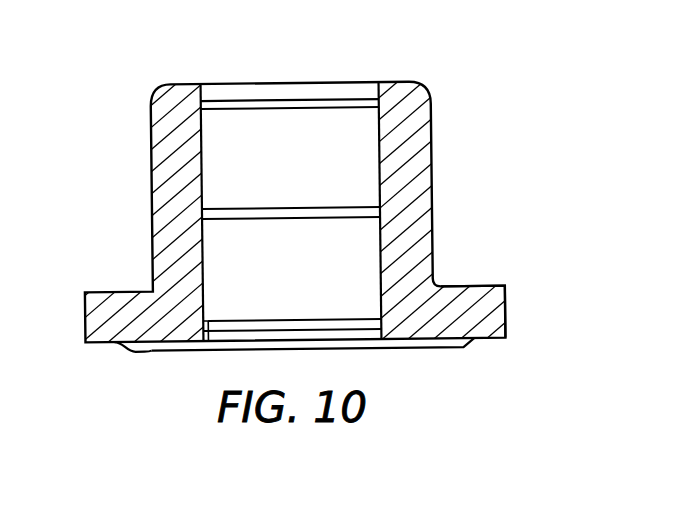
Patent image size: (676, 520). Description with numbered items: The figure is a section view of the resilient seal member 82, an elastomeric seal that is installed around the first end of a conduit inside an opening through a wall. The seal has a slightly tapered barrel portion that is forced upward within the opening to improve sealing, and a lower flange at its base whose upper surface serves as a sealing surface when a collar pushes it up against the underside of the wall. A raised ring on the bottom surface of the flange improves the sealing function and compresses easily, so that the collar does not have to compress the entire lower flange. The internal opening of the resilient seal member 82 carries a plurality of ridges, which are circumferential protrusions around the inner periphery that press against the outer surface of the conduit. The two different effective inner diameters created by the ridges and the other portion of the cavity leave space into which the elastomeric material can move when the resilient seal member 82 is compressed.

The resilient seal member 82 is at (338, 260).